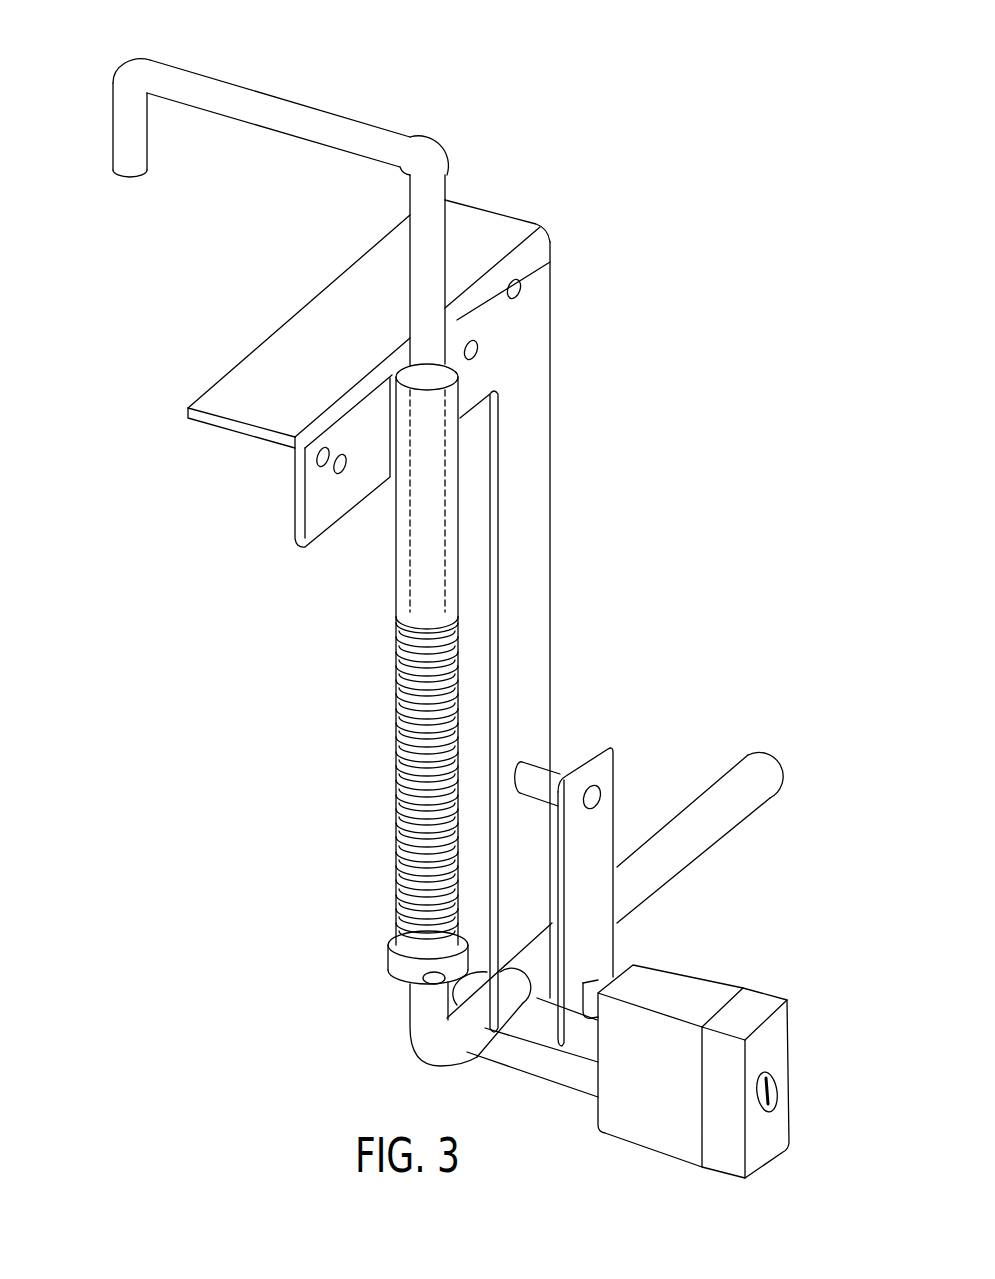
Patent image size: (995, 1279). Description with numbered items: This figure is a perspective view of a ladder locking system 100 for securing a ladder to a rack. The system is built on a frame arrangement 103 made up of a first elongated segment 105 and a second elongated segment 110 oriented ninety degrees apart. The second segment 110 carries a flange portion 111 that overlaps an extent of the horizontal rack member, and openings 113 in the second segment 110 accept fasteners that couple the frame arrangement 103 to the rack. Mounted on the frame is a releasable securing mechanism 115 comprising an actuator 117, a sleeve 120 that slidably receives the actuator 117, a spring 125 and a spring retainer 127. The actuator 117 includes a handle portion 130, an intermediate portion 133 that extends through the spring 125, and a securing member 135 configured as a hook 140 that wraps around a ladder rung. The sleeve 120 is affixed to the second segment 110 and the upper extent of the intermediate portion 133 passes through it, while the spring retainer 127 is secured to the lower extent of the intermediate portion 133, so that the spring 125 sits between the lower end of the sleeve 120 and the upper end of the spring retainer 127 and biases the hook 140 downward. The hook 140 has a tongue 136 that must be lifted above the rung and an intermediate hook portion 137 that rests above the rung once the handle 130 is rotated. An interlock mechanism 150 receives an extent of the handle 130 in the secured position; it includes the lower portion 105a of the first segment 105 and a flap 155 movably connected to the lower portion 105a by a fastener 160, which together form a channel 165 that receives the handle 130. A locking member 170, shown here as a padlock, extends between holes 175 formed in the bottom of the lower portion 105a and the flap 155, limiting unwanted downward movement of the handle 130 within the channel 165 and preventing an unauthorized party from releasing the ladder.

The locking system 100 is at (477, 122).
The frame arrangement 103 is at (622, 556).
The first elongated segment 105 is at (543, 492).
The lower portion 105a is at (537, 745).
The second elongated segment 110 is at (318, 522).
The flange portion 111 is at (240, 383).
The openings 113 is at (340, 473).
The releasable securing mechanism 115 is at (328, 820).
The actuator 117 is at (324, 873).
The sleeve 120 is at (402, 577).
The spring 125 is at (406, 736).
The spring retainer 127 is at (393, 962).
The handle portion 130 is at (735, 830).
The intermediate portion 133 is at (442, 920).
The securing member 135 is at (330, 94).
The tongue 136 is at (113, 124).
The intermediate hook portion 137 is at (232, 82).
The hook 140 is at (273, 177).
The interlock mechanism 150 is at (633, 722).
The flap 155 is at (600, 825).
The fastener 160 is at (600, 783).
The channel 165 is at (541, 1012).
The locking member 170 is at (648, 1148).
The holes 175 is at (603, 978).